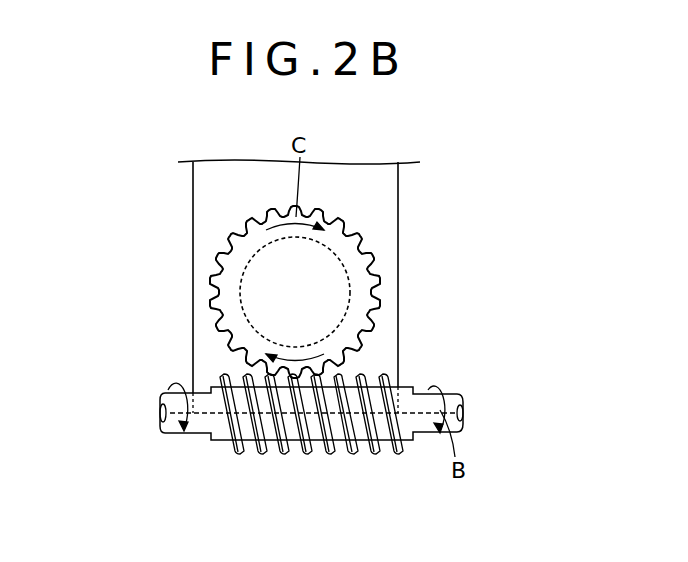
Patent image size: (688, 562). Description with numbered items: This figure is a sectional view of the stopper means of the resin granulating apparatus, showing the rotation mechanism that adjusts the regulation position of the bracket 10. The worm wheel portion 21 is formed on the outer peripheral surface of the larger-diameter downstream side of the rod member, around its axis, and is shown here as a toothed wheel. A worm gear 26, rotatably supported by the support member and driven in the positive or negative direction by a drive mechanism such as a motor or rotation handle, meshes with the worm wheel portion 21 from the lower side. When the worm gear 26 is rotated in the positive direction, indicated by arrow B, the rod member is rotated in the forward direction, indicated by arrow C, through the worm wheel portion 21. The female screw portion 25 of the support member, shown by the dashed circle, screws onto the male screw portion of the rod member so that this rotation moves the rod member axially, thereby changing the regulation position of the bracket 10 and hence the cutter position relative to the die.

The bracket 10 is at (388, 190).
The worm wheel portion 21 is at (381, 285).
The female screw portion 25 is at (347, 268).
The worm gear 26 is at (373, 455).